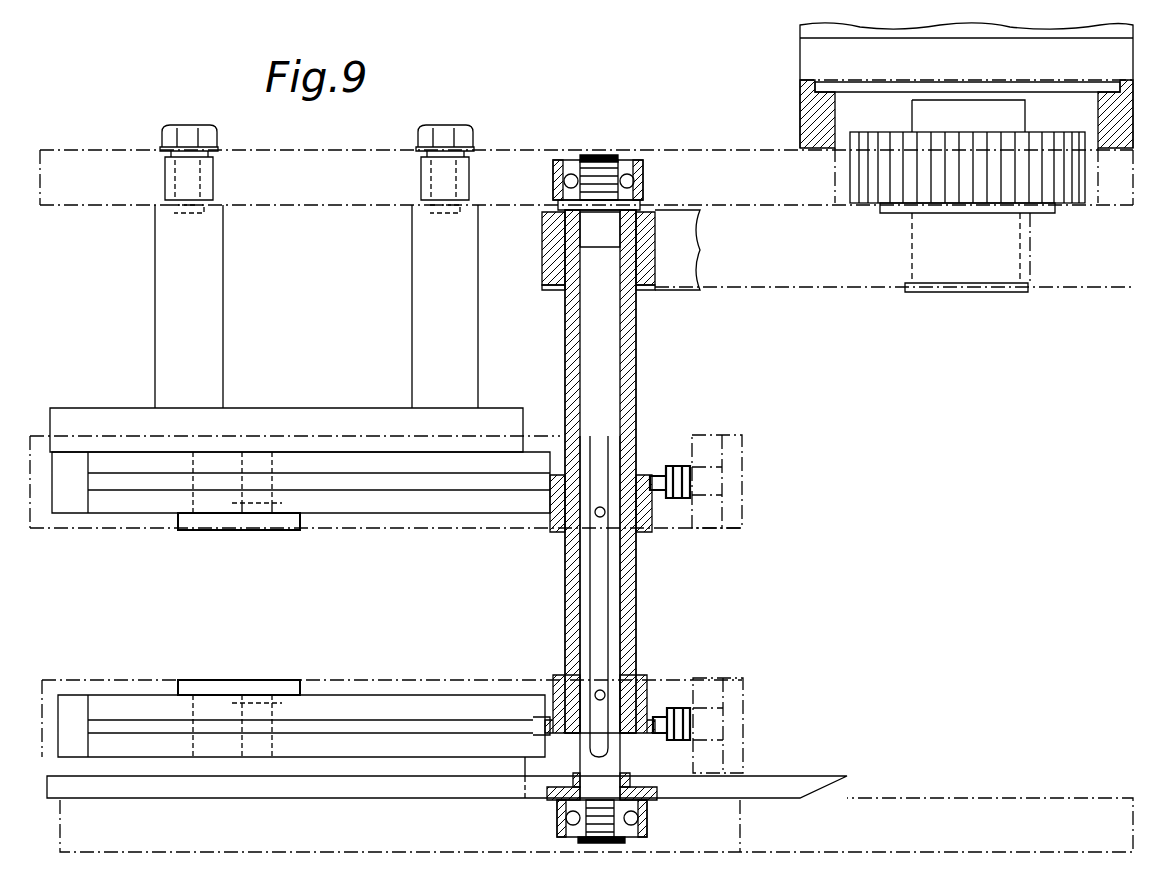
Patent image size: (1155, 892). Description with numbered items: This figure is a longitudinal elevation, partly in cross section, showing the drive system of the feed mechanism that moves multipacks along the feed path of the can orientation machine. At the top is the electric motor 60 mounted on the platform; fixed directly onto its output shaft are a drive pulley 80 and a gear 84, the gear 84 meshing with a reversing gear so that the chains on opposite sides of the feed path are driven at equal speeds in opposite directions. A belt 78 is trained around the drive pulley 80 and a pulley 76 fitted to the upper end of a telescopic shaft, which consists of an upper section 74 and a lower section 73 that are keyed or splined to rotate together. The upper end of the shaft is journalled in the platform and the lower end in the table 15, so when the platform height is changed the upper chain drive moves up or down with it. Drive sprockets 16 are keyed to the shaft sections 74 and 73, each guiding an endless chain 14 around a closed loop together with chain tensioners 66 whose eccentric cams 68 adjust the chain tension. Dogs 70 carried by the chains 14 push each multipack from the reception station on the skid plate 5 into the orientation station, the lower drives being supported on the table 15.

The skid plate 5 is at (807, 780).
The endless chain 14 is at (702, 690).
The table 15 is at (883, 808).
The drive sprocket 16 is at (552, 535).
The electric motor 60 is at (805, 57).
The chain tensioner 66 is at (357, 513).
The eccentric cam 68 is at (222, 530).
The dog 70 is at (733, 500).
The lower telescopic shaft section 73 is at (620, 615).
The upper telescopic shaft section 74 is at (637, 384).
The pulley 76 is at (548, 290).
The belt 78 is at (815, 268).
The drive pulley 80 is at (998, 290).
The gear 84 is at (1045, 183).